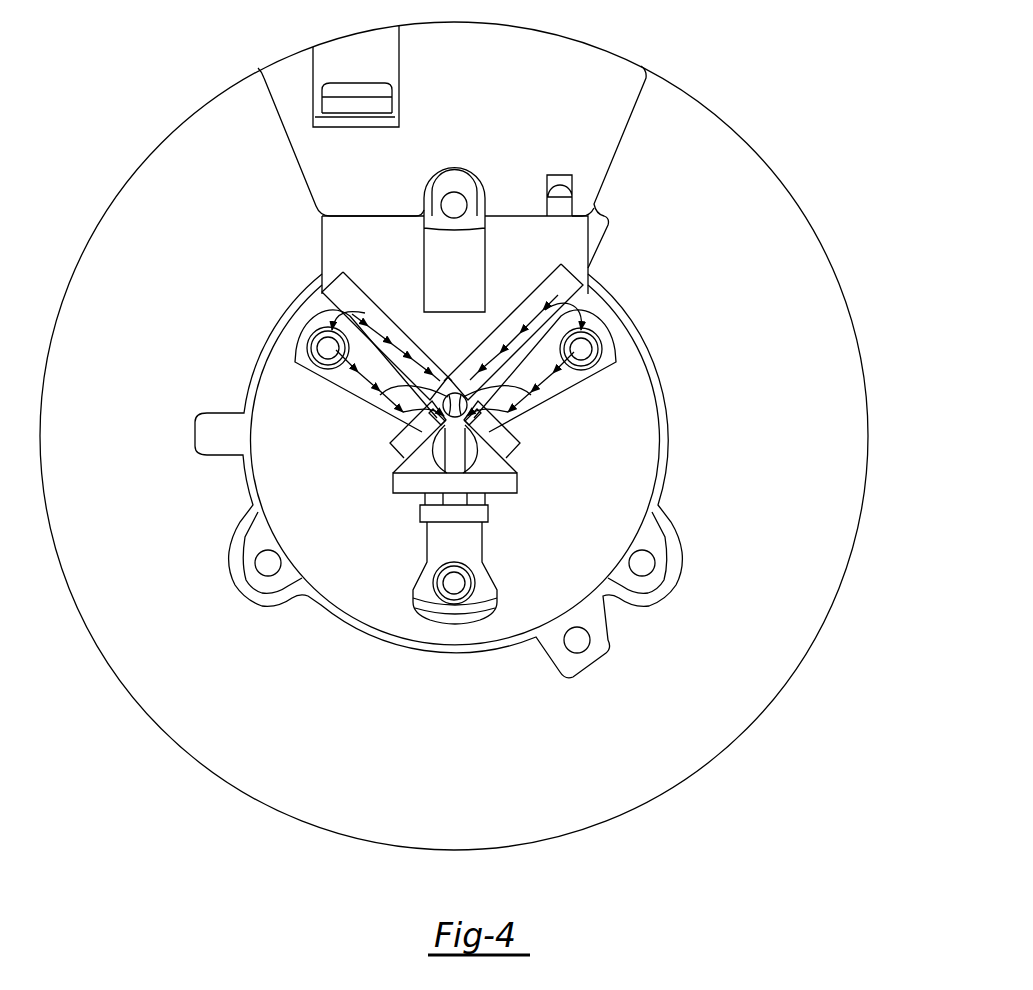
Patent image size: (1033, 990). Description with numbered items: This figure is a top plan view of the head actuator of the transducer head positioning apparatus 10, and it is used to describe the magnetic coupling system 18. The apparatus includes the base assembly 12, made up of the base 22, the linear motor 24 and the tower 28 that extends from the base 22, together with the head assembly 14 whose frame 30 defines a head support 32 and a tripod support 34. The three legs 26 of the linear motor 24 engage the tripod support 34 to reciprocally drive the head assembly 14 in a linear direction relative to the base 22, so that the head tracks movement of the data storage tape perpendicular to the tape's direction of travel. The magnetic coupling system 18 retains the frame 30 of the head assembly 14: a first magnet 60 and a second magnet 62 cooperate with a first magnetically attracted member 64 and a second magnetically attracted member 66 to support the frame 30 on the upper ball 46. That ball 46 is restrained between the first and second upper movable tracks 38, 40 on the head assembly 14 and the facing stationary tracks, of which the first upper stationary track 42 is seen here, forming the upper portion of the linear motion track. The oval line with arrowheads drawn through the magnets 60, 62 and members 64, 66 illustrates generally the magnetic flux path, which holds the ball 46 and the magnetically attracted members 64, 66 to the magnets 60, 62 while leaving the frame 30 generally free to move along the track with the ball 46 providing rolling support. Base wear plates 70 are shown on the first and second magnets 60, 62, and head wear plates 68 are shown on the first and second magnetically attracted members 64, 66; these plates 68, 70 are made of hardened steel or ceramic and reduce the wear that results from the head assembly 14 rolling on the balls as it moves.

The transducer head positioning apparatus 10 is at (708, 86).
The base assembly 12 is at (737, 749).
The head assembly 14 is at (444, 527).
The magnetic coupling system 18 is at (477, 347).
The base 22 is at (727, 172).
The linear motor 24 is at (652, 460).
The legs 26 is at (458, 585).
The tower 28 is at (575, 244).
The frame 30 is at (400, 488).
The head support 32 is at (480, 516).
The tripod support 34 is at (553, 395).
The first upper movable track 38 is at (438, 418).
The second upper movable track 40 is at (523, 419).
The first upper stationary track 42 is at (423, 378).
The upper ball 46 is at (468, 403).
The first magnet 60 is at (385, 320).
The second magnet 62 is at (525, 314).
The first magnetically attracted member 64 is at (400, 447).
The second magnetically attracted member 66 is at (503, 448).
The head wear plates 68 is at (454, 458).
The base wear plates 70 is at (464, 385).